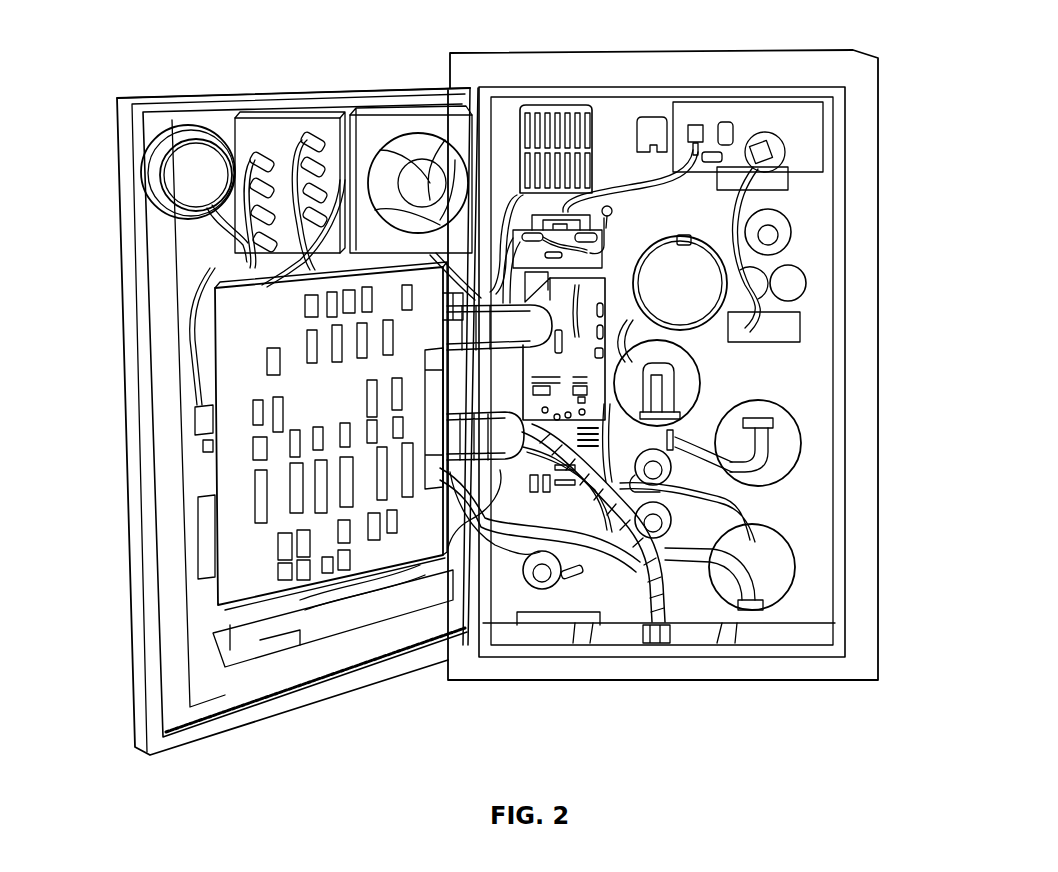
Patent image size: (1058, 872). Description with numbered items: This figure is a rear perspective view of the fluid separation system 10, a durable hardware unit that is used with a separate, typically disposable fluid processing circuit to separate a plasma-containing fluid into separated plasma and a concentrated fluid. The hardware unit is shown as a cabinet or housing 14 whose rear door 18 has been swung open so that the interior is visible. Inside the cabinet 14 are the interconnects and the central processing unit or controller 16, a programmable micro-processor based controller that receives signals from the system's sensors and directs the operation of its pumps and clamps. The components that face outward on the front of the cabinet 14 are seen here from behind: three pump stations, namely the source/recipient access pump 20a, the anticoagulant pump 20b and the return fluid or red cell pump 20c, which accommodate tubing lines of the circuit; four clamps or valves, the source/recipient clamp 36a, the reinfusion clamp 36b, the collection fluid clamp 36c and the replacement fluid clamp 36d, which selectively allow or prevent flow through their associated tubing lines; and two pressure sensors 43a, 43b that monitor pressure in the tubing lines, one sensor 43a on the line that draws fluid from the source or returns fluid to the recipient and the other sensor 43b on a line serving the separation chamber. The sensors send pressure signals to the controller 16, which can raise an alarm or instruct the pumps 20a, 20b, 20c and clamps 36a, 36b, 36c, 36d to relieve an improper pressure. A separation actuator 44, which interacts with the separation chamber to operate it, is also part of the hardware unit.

The fluid separation system 10 is at (92, 662).
The cabinet or housing 14 is at (852, 675).
The central processing unit or controller 16 is at (237, 425).
The rear door 18 is at (215, 727).
The source/recipient access pump 20a is at (778, 573).
The anticoagulant pump 20b is at (785, 453).
The return fluid pump 20c is at (667, 403).
The fluid source/recipient clamp or valve 36a is at (670, 472).
The reinfusion clamp or valve 36b is at (667, 523).
The collection fluid clamp or valve 36c is at (543, 590).
The replacement fluid clamp or valve 36d is at (773, 215).
The pressure sensor 43a is at (793, 276).
The pressure sensor 43b is at (735, 252).
The separation actuator 44 is at (555, 118).